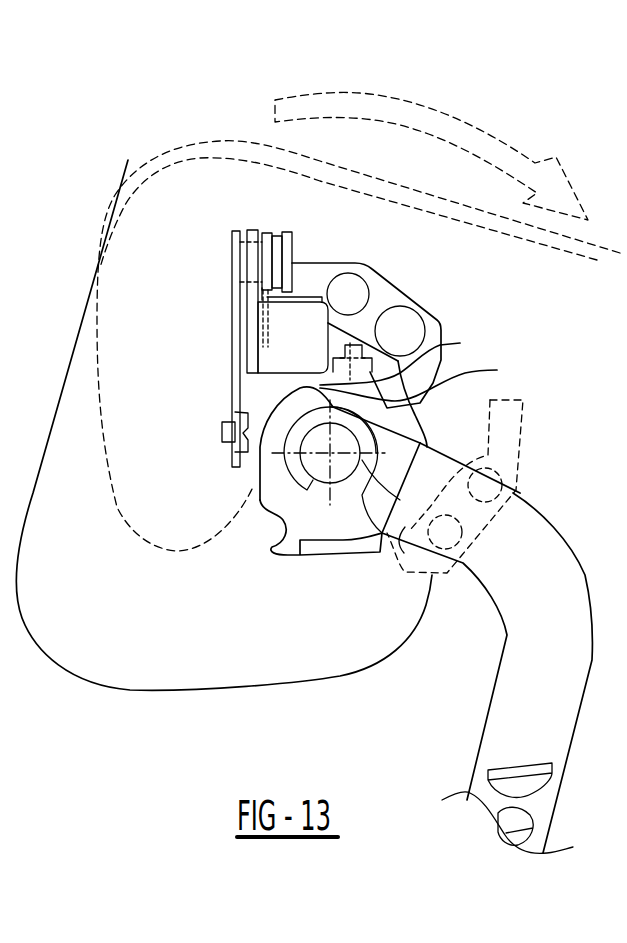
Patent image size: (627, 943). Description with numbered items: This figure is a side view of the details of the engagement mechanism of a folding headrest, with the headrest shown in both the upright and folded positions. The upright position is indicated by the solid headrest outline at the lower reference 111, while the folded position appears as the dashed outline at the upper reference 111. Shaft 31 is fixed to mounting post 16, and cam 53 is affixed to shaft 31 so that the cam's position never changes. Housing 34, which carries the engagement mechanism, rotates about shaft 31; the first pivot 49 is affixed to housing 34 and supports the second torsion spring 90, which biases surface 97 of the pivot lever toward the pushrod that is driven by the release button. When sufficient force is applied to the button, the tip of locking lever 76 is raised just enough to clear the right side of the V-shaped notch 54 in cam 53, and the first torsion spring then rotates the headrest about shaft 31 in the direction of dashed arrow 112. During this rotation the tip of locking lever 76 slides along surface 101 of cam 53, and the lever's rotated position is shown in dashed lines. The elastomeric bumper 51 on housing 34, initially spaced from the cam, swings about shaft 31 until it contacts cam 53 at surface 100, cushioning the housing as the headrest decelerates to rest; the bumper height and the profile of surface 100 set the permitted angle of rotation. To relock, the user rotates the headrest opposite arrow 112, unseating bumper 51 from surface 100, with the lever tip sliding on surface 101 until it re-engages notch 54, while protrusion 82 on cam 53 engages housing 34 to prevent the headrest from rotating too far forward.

The mounting post 16 is at (563, 671).
The shaft 31 is at (343, 480).
The housing 34 is at (232, 370).
The first pivot 49 is at (232, 257).
The bumper 51 is at (340, 345).
The cam 53 is at (300, 518).
The V-shaped notch 54 is at (310, 385).
The locking lever 76 is at (397, 288).
The protrusion or tooth 82 is at (280, 546).
The second torsion spring 90 is at (273, 233).
The surface 97 is at (302, 366).
The surface 100 is at (408, 388).
The surface 101 is at (384, 537).
The headrest outline 111 is at (33, 493).
The dashed arrow 112 is at (503, 147).